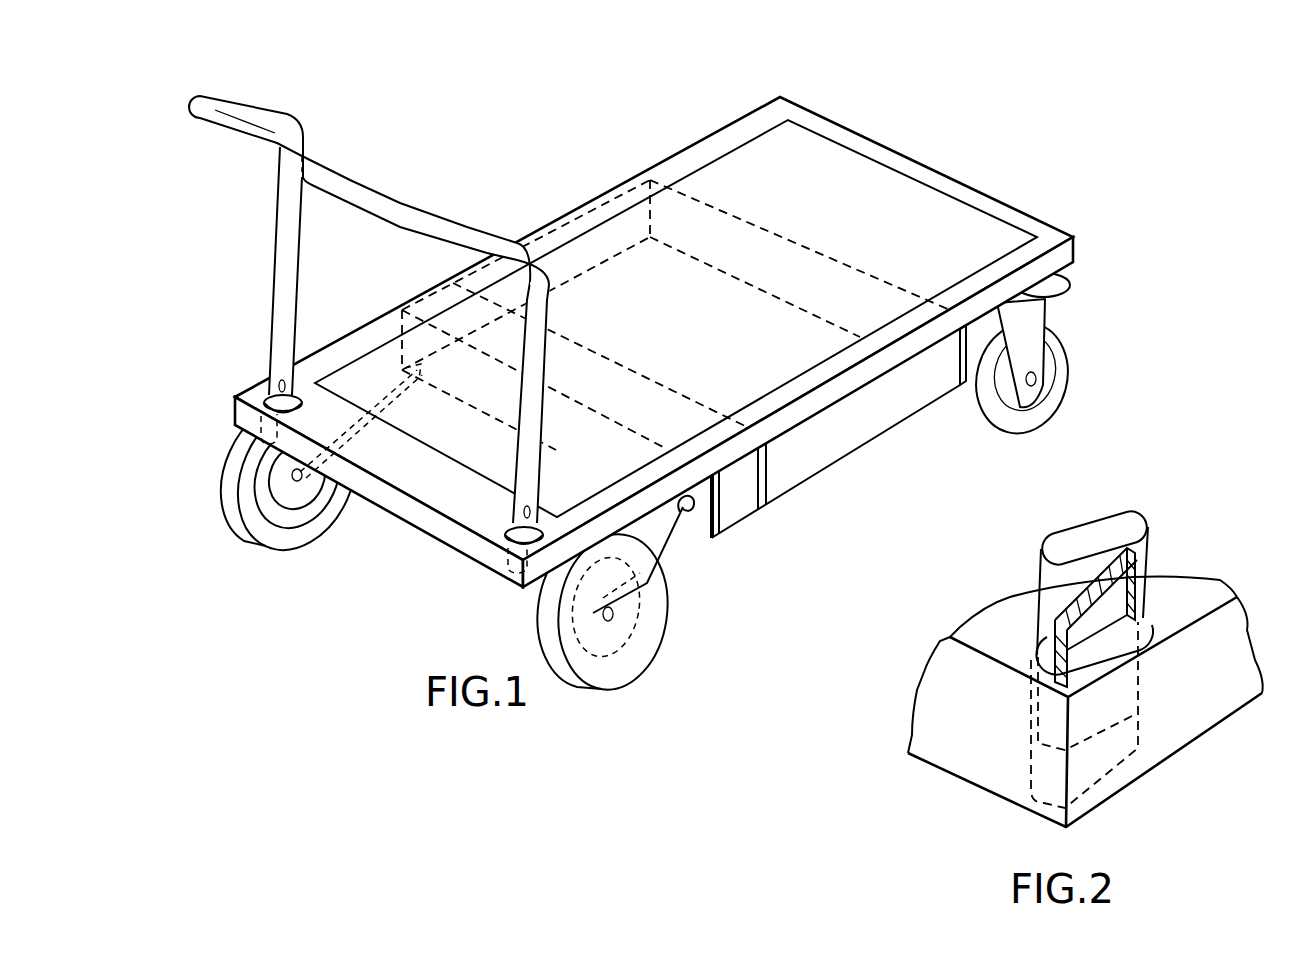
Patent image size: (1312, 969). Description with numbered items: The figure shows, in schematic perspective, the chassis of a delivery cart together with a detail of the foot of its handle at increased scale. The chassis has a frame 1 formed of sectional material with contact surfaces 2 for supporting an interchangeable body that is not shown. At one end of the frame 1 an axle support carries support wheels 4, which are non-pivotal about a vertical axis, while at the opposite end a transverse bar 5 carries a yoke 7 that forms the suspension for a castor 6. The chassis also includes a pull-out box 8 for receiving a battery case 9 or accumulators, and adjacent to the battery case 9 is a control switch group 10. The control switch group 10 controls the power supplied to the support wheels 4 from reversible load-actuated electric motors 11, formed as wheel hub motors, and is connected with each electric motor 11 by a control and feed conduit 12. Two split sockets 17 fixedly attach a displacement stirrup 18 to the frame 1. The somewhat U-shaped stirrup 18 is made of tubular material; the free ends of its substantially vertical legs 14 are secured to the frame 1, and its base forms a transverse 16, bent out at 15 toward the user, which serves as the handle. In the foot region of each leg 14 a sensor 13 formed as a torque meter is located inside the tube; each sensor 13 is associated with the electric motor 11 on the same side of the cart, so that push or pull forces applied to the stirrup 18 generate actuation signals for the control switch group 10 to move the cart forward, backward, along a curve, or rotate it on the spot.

In FIG. 1, the frame 1 is at (636, 375).
In FIG. 2, the frame 1 is at (1085, 669).
In FIG. 1, the contact surfaces 2 is at (814, 210).
In FIG. 1, the support wheels 4 is at (226, 511).
In FIG. 1, the transverse bar 5 is at (923, 172).
In FIG. 1, the castor 6 is at (1064, 356).
In FIG. 1, the yoke 7 is at (1033, 312).
In FIG. 1, the pull-out box 8 is at (960, 385).
In FIG. 1, the battery case 9 is at (858, 443).
In FIG. 1, the control switch group 10 is at (752, 507).
In FIG. 1, the electric motors 11 is at (290, 516).
In FIG. 1, the control and feed conduit 12 is at (400, 410).
In FIG. 1, the sensors 13 is at (277, 388).
In FIG. 2, the sensors 13 is at (1083, 606).
In FIG. 1, the legs 14 is at (278, 224).
In FIG. 2, the legs 14 is at (1048, 571).
In FIG. 1, the bend 15 is at (252, 106).
In FIG. 1, the transverse 16 is at (361, 192).
In FIG. 1, the split sockets 17 is at (240, 427).
In FIG. 2, the split sockets 17 is at (1140, 737).
In FIG. 1, the displacement stirrup 18 is at (408, 290).